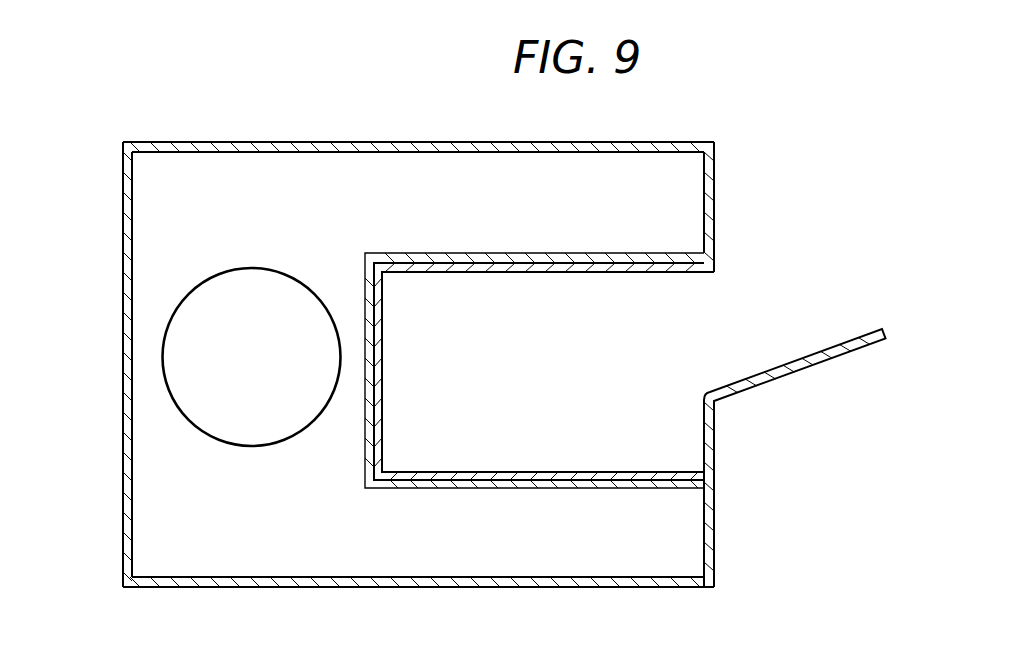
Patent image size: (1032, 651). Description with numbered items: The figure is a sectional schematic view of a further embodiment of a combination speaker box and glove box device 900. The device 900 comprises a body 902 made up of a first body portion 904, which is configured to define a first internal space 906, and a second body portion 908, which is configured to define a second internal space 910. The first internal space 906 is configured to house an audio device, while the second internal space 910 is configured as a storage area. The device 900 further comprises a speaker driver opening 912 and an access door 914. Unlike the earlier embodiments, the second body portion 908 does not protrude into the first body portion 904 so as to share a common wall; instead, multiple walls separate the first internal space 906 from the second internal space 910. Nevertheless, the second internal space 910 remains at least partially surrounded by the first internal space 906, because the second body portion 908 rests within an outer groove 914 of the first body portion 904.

The combination speaker box and glove box device 900 is at (770, 194).
The body 902 is at (110, 172).
The first body portion 904 is at (316, 142).
The first internal space 906 is at (274, 209).
The second body portion 908 is at (715, 437).
The second internal space 910 is at (561, 364).
The speaker driver opening 912 is at (168, 388).
The access door 914 is at (410, 482).